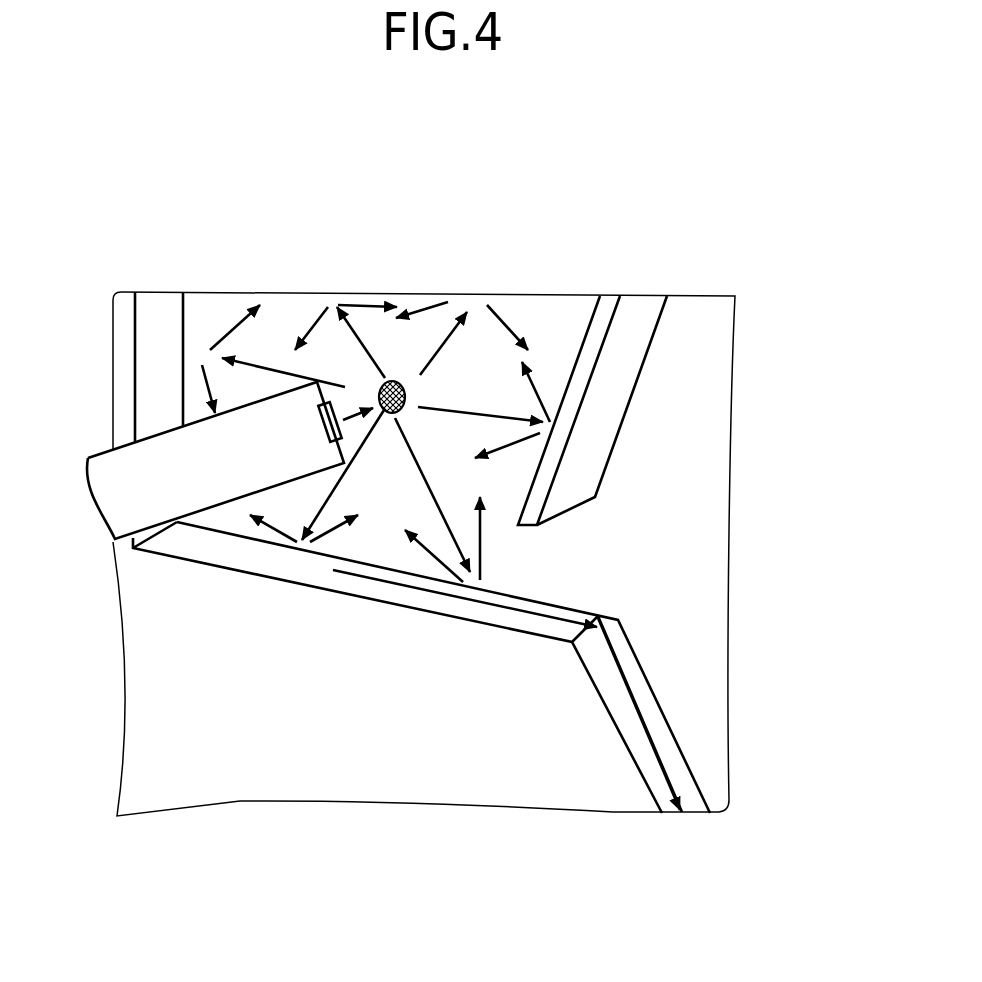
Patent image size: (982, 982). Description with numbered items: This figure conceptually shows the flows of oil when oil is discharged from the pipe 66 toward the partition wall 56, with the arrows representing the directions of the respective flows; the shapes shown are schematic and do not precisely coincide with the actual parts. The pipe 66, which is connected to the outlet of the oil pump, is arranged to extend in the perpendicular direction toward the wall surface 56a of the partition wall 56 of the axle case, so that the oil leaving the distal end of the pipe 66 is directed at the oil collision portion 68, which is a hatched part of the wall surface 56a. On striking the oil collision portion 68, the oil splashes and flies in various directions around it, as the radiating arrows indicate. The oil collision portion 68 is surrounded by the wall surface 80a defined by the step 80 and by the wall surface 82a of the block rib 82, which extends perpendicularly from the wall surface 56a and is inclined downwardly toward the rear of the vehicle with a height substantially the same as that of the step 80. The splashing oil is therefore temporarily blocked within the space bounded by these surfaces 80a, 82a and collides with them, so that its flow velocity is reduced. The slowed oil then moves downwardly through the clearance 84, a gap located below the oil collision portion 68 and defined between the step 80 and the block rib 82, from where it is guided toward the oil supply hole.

The partition wall 56 is at (377, 414).
The wall surface 56a is at (477, 358).
The pipe 66 is at (163, 462).
The oil collision portion 68 is at (398, 372).
The step 80 is at (439, 554).
The wall surface 80a is at (167, 318).
The block rib 82 is at (647, 386).
The wall surface 82a is at (587, 337).
The clearance 84 is at (545, 562).